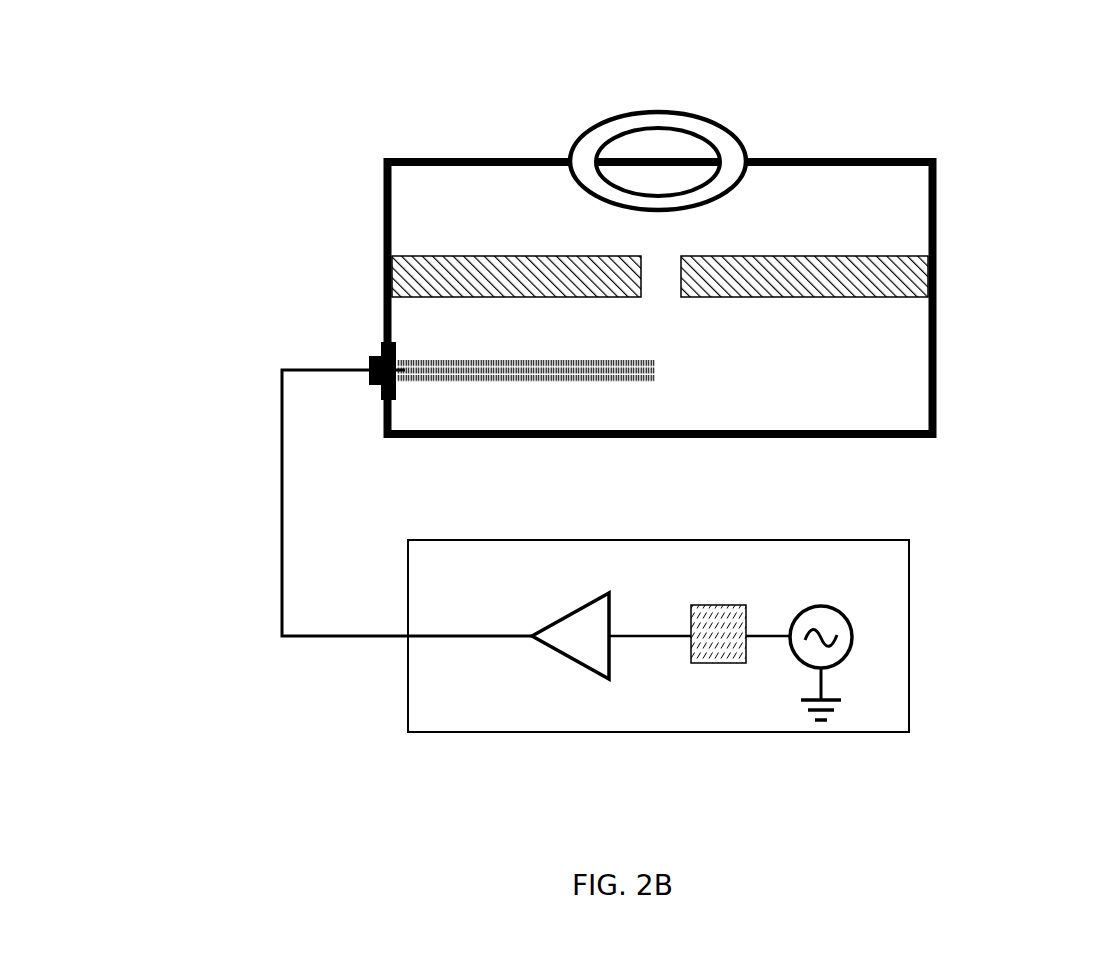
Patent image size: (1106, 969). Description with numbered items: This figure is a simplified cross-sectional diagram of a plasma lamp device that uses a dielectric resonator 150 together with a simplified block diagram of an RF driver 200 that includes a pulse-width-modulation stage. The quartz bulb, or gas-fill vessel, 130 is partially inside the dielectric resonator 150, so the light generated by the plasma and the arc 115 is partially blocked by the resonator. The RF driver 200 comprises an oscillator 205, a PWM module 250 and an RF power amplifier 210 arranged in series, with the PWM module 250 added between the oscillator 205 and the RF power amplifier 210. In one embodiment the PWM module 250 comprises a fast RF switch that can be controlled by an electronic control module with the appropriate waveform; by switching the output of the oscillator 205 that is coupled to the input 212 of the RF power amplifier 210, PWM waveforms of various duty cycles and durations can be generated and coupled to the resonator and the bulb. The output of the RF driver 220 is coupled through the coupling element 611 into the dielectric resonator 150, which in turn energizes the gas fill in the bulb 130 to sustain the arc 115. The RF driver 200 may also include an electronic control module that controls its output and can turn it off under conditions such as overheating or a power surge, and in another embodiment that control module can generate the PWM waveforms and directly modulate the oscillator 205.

The dielectric resonator 150 is at (998, 175).
The quartz bulb (gas-fill vessel) 130 is at (597, 127).
The arc 115 is at (652, 160).
The coupling element 611 is at (367, 365).
The output of the RF driver 220 is at (399, 641).
The RF driver 200 is at (909, 590).
The RF power amplifier 210 is at (578, 665).
The input of the RF power amplifier 212 is at (610, 640).
The PWM module 250 is at (718, 605).
The oscillator 205 is at (848, 655).